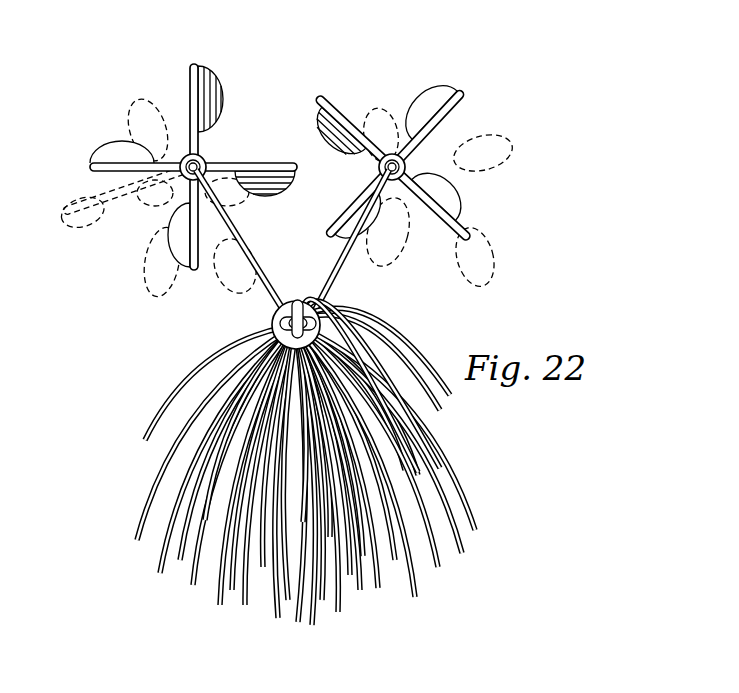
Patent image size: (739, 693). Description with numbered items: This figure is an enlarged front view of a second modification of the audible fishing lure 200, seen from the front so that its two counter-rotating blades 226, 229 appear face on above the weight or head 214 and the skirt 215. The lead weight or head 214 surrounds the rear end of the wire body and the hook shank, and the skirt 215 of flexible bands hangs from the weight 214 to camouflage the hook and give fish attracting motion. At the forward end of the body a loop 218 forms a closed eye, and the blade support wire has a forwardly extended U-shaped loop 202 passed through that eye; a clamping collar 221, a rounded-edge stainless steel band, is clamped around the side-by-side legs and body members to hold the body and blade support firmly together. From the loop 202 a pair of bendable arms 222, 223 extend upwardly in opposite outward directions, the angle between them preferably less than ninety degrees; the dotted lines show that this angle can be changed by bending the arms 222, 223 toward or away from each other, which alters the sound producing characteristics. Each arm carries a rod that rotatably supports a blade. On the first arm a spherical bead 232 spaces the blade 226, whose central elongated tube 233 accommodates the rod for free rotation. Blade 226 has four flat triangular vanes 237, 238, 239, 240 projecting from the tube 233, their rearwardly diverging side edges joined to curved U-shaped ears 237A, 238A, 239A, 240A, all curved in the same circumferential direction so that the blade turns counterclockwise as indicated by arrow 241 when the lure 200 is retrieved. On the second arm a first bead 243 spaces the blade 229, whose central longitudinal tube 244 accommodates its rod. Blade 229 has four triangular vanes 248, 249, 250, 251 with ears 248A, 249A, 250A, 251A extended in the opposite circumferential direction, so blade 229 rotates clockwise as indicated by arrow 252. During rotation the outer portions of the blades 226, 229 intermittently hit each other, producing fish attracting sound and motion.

The audible fishing lure 200 is at (528, 98).
The U-shaped loop 202 is at (305, 315).
The weight or head 214 is at (282, 346).
The skirt 215 is at (163, 569).
The loop 218 is at (275, 314).
The clamping collar 221 is at (322, 331).
The bendable arm 222 is at (230, 260).
The bendable arm 223 is at (368, 223).
The blade 226 is at (158, 241).
The blade 229 is at (466, 126).
The spherical bead 232 is at (212, 161).
The central elongated tube 233 is at (207, 155).
The vane 237 is at (100, 171).
The curved ear 237A is at (108, 148).
The vane 238 is at (190, 80).
The curved ear 238A is at (218, 92).
The vane 239 is at (250, 169).
The curved ear 239A is at (265, 197).
The vane 240 is at (190, 275).
The curved ear 240A is at (170, 258).
The arrow 241 is at (149, 26).
The first bead 243 is at (405, 165).
The central longitudinal tube 244 is at (405, 94).
The vane 248 is at (370, 190).
The ear 248A is at (352, 215).
The vane 249 is at (350, 87).
The ear 249A is at (318, 110).
The vane 250 is at (458, 112).
The ear 250A is at (432, 100).
The vane 251 is at (445, 222).
The ear 251A is at (450, 208).
The arrow 252 is at (405, 48).